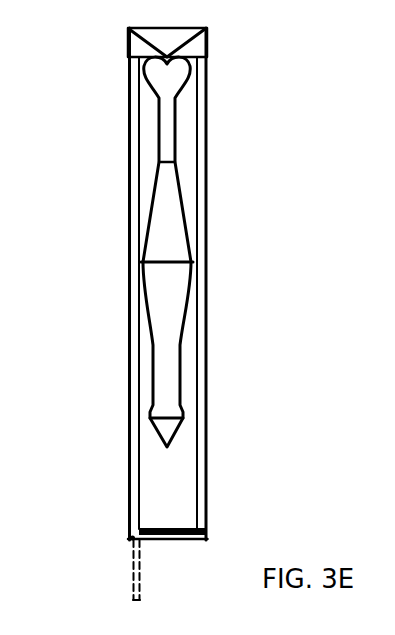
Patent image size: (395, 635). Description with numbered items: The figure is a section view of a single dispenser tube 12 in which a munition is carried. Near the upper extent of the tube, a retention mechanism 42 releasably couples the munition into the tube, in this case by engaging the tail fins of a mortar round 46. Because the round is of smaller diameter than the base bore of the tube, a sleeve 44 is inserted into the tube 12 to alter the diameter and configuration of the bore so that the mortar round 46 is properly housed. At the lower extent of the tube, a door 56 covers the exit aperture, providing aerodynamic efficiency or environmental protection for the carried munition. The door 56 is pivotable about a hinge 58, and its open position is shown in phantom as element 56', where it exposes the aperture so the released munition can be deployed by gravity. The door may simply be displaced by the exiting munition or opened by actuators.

The dispenser tube 12 is at (207, 191).
The retention mechanism 42 is at (207, 50).
The sleeve 44 is at (207, 358).
The mortar round 46 is at (168, 275).
The door 56 is at (179, 562).
The door in open position 56' is at (84, 571).
The hinge 58 is at (130, 538).